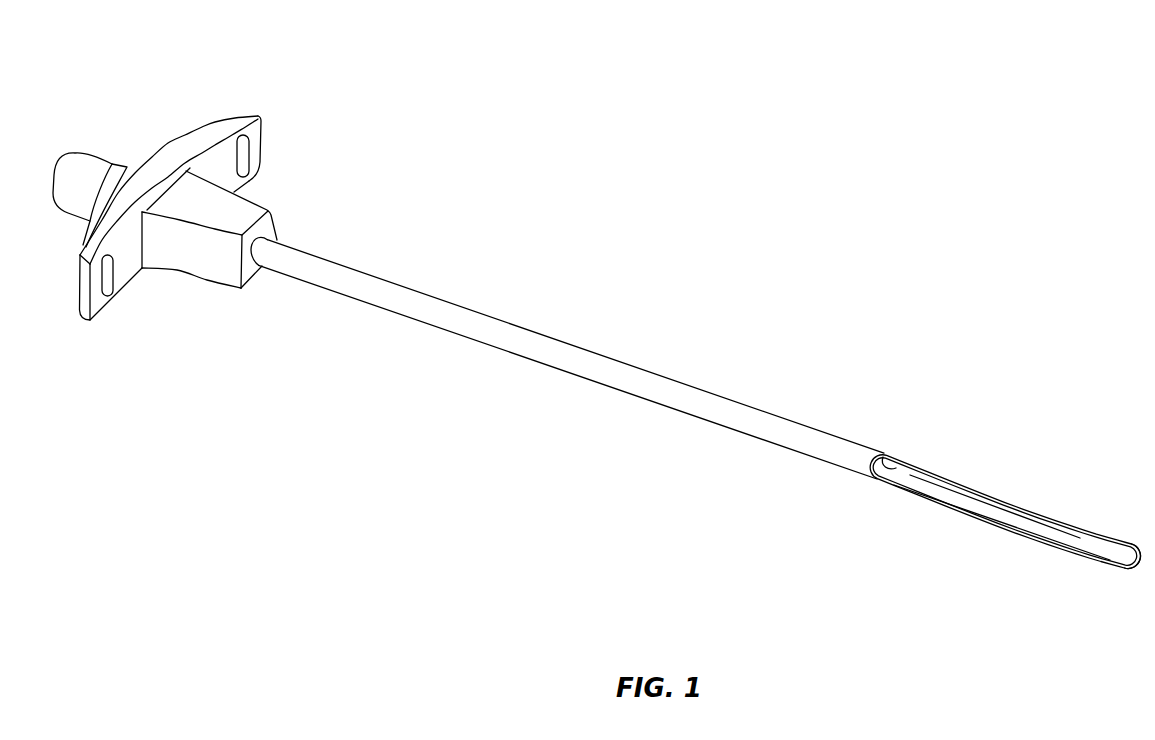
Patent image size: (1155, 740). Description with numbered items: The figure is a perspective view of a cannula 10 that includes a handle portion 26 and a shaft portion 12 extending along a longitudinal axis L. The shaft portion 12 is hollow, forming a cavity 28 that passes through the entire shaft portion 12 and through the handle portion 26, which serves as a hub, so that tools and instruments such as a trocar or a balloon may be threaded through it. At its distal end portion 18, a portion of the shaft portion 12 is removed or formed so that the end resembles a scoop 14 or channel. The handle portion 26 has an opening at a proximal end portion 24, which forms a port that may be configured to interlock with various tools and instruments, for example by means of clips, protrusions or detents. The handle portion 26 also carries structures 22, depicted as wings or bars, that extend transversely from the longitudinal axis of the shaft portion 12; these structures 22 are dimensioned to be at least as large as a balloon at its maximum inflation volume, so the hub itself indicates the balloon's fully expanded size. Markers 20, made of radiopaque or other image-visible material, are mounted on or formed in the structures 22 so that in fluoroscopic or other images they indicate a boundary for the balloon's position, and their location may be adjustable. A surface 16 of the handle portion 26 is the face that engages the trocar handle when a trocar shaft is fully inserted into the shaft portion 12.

The cannula 10 is at (451, 115).
The shaft portion 12 is at (570, 357).
The scoop 14 is at (1022, 523).
The surface 16 is at (215, 221).
The distal end portion 18 is at (1022, 541).
The markers 20 is at (248, 161).
The structures 22 is at (259, 104).
The proximal end portion 24 is at (85, 153).
The handle portion 26 is at (221, 284).
The cavity 28 is at (114, 163).